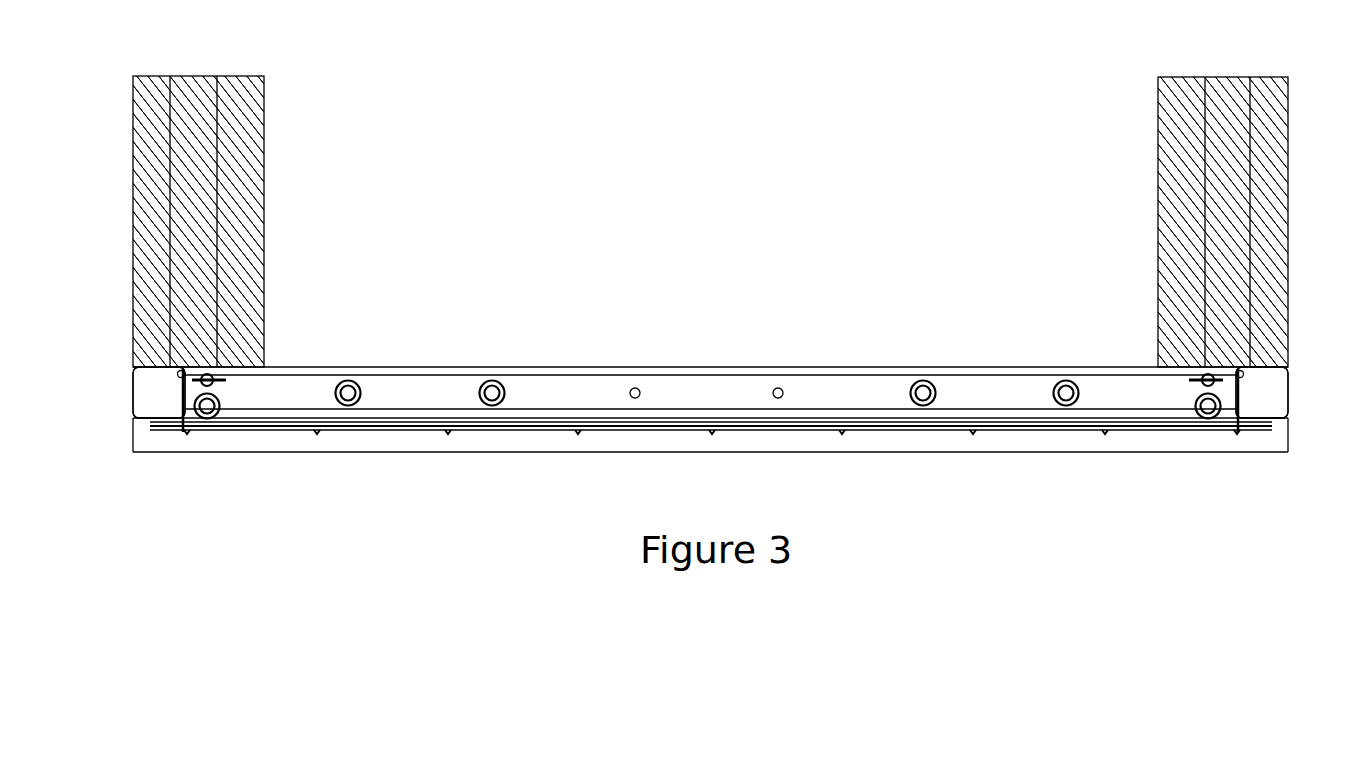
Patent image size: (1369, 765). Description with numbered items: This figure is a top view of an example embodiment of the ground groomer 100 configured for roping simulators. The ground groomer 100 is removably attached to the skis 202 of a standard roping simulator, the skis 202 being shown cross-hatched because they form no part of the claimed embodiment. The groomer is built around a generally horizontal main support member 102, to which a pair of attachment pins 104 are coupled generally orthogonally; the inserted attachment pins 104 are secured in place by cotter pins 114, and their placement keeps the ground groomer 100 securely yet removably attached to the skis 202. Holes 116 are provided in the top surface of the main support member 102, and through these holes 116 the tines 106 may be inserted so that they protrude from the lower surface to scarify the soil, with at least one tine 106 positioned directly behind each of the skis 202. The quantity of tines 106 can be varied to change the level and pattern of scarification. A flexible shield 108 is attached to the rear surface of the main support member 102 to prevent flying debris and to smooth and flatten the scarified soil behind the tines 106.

The ground groomer 100 is at (613, 53).
The main support member 102 is at (710, 354).
The attachment pins 104 is at (711, 373).
The tines 106 is at (482, 399).
The flexible shield 108 is at (710, 476).
The cotter pins 114 is at (713, 392).
The holes 116 is at (712, 345).
The skis 202 is at (710, 221).